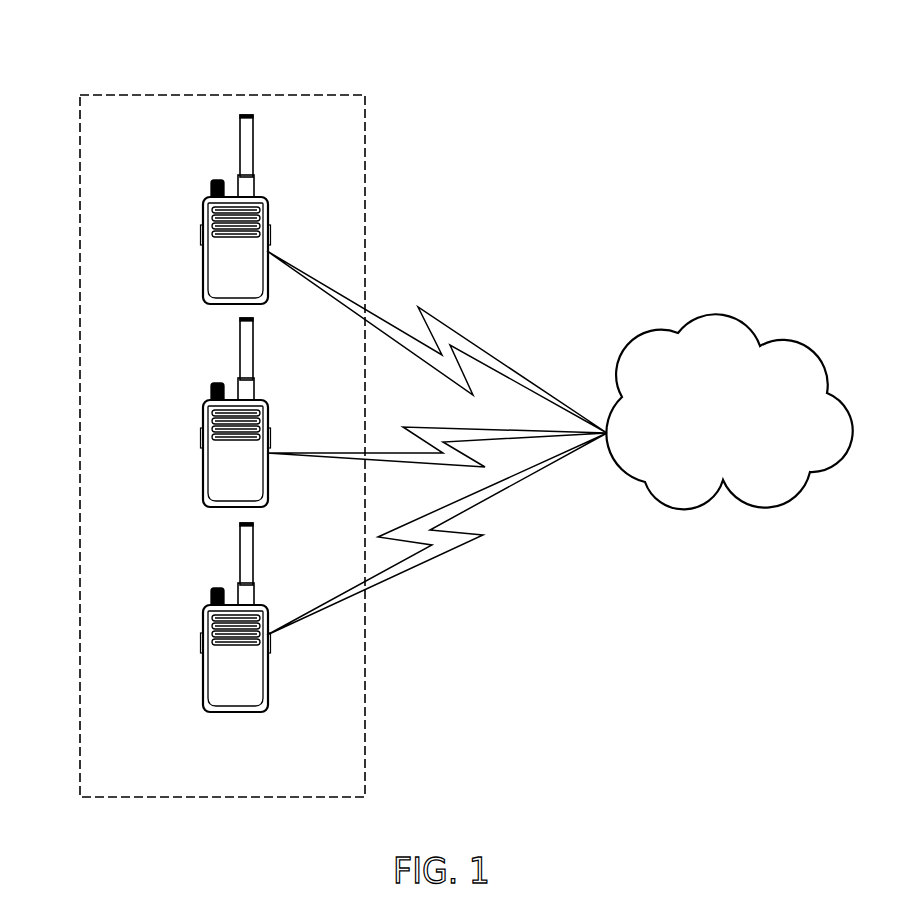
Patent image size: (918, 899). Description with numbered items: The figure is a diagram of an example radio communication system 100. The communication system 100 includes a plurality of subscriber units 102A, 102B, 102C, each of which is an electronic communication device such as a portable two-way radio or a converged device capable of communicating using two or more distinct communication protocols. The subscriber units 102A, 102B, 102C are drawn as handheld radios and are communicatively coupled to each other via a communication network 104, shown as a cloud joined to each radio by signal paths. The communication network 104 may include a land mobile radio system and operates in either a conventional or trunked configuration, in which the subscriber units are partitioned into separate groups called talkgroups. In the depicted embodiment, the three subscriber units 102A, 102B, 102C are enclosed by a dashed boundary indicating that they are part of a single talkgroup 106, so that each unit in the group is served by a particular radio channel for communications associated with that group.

The radio communication system 100 is at (140, 33).
The subscriber unit 102A is at (205, 250).
The subscriber unit 102B is at (205, 455).
The subscriber unit 102C is at (205, 658).
The communication network 104 is at (627, 352).
The talkgroup 106 is at (80, 445).